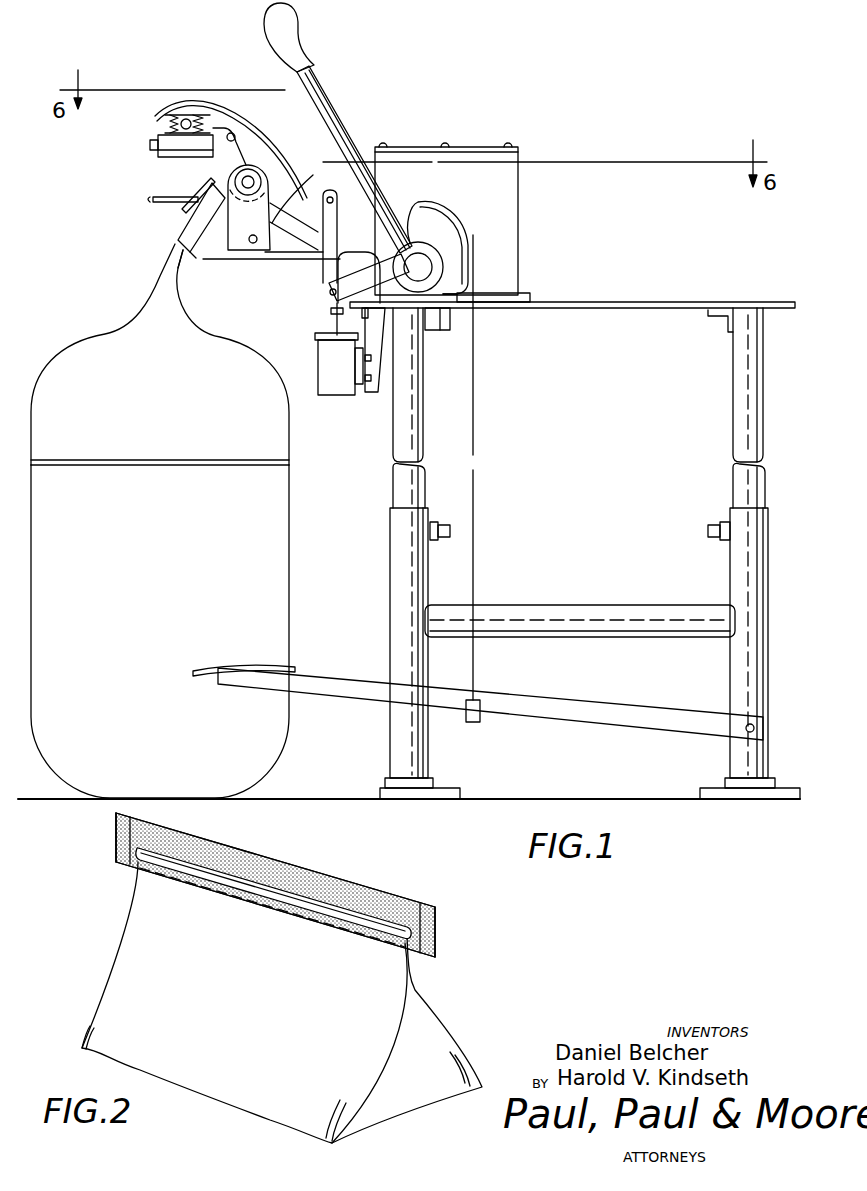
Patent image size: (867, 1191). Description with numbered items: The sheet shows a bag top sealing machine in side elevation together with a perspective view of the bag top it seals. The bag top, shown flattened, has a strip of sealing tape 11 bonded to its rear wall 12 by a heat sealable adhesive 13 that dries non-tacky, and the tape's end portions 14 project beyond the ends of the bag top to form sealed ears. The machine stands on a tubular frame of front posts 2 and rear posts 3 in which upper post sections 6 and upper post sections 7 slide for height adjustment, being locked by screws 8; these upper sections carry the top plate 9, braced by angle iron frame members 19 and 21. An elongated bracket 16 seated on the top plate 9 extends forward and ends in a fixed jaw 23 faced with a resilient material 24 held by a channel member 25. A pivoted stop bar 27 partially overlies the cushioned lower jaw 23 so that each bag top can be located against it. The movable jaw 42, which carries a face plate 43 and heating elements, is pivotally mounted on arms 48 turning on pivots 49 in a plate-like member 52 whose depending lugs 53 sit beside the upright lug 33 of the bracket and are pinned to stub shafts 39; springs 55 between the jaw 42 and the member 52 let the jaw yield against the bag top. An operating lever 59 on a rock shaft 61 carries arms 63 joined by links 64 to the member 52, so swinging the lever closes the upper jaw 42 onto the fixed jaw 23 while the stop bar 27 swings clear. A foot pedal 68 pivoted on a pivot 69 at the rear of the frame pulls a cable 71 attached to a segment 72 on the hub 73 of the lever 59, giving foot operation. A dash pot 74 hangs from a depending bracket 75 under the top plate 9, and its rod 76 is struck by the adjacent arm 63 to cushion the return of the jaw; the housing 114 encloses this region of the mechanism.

In FIG. 1, the front posts 2 is at (395, 735).
In FIG. 1, the rear posts 3 is at (740, 672).
In FIG. 1, the upper post sections 6 is at (405, 430).
In FIG. 1, the upper post sections 7 is at (745, 418).
In FIG. 1, the clamping screws 8 is at (706, 530).
In FIG. 1, the top plate 9 is at (622, 302).
In FIG. 1, the sealing tape 11 is at (158, 201).
In FIG. 2, the sealing tape 11 is at (388, 893).
In FIG. 2, the rear wall 12 is at (292, 882).
In FIG. 2, the heat sealable adhesive 13 is at (242, 858).
In FIG. 2, the end portions 14 is at (436, 932).
In FIG. 1, the bracket 16 is at (534, 296).
In FIG. 1, the longitudinal frame member 19 is at (438, 312).
In FIG. 1, the longitudinal frame member 21 is at (728, 318).
In FIG. 1, the fixed jaw 23 is at (193, 264).
In FIG. 1, the resilient material 24 is at (196, 230).
In FIG. 1, the channel member 25 is at (186, 255).
In FIG. 1, the stop bar 27 is at (200, 185).
In FIG. 1, the upright lug 33 is at (258, 215).
In FIG. 1, the stub shafts 39 is at (246, 180).
In FIG. 1, the movable jaw 42 is at (156, 145).
In FIG. 1, the plate 43 is at (158, 155).
In FIG. 1, the arms 48 is at (222, 126).
In FIG. 1, the pivots 49 is at (235, 135).
In FIG. 1, the plate-like member 52 is at (265, 123).
In FIG. 1, the depending lugs 53 is at (282, 187).
In FIG. 1, the springs 55 is at (165, 125).
In FIG. 1, the operating lever 59 is at (335, 100).
In FIG. 1, the rock shaft 61 is at (418, 267).
In FIG. 1, the arms 63 is at (375, 268).
In FIG. 1, the links 64 is at (330, 267).
In FIG. 1, the foot pedal 68 is at (230, 660).
In FIG. 1, the pivot 69 is at (755, 725).
In FIG. 1, the cable 71 is at (478, 520).
In FIG. 1, the segment 72 is at (445, 222).
In FIG. 1, the hub 73 is at (435, 270).
In FIG. 1, the dash pot 74 is at (333, 368).
In FIG. 1, the depending bracket 75 is at (370, 390).
In FIG. 1, the rod 76 is at (332, 318).
In FIG. 1, the housing 114 is at (488, 146).